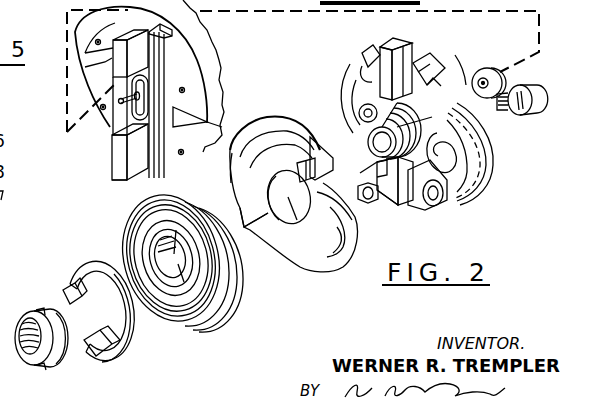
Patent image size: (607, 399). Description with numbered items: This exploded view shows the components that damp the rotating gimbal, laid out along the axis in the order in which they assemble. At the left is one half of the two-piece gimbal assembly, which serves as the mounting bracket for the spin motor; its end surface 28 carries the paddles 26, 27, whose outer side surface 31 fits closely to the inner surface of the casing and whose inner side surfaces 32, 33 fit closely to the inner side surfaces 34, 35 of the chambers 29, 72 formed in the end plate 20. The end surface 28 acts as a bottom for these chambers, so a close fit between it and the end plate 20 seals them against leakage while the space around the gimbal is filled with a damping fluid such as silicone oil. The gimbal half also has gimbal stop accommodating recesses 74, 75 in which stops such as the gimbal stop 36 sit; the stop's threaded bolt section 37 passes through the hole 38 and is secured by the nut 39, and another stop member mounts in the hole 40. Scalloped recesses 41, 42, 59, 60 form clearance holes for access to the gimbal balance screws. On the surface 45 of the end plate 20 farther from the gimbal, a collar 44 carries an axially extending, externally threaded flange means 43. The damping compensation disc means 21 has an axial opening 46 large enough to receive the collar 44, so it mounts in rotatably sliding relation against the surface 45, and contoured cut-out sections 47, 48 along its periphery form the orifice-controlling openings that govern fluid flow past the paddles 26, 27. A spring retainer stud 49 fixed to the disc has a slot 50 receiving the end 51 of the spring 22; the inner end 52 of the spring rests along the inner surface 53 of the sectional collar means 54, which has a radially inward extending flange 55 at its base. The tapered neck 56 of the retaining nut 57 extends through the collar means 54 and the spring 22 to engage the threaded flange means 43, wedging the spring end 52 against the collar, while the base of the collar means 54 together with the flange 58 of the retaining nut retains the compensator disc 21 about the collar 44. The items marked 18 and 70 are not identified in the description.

The washer 18 is at (486, 68).
The end plate 20 is at (485, 187).
The damping compensation disc means 21 is at (271, 120).
The spring 22 is at (194, 212).
The paddle 26 is at (131, 82).
The paddle 27 is at (118, 150).
The end surface 28 is at (157, 68).
The chamber 29 is at (417, 47).
The side surface 31 is at (133, 183).
The inner side surface 32 is at (119, 102).
The inner side surface 33 is at (128, 129).
The inner side surface 34 is at (397, 38).
The inner side surface 35 is at (414, 206).
The gimbal stop 36 is at (534, 113).
The threaded bolt section 37 is at (516, 112).
The hole 38 is at (478, 164).
The nut 39 is at (368, 204).
The hole 40 is at (353, 92).
The scalloped recess 41 is at (450, 74).
The scalloped recess 42 is at (363, 128).
The axial threaded flange means 43 is at (441, 137).
The collar 44 is at (407, 181).
The surface 45 is at (374, 104).
The axial opening 46 is at (287, 222).
The contoured cut-out section 47 is at (242, 214).
The contoured cut-out section 48 is at (332, 165).
The spring retainer stud 49 is at (317, 140).
The slot 50 is at (298, 164).
The end 51 is at (240, 252).
The inner end 52 is at (171, 258).
The inner surface 53 is at (65, 283).
The sectional collar means 54 is at (93, 259).
The radially inward extending flange 55 is at (85, 343).
The tapered neck 56 is at (52, 312).
The retaining nut 57 is at (14, 310).
The flange 58 is at (63, 362).
The scalloped recess 59 is at (441, 200).
The scalloped recess 60 is at (375, 58).
The slot 70 is at (409, 45).
The chamber 72 is at (402, 187).
The gimbal stop accommodating recess 74 is at (92, 33).
The gimbal recess 75 is at (222, 126).